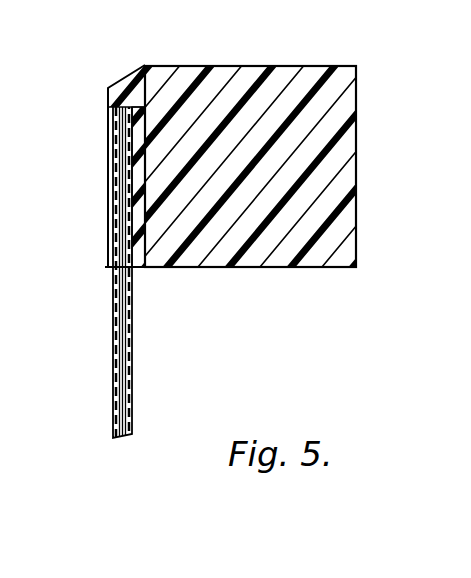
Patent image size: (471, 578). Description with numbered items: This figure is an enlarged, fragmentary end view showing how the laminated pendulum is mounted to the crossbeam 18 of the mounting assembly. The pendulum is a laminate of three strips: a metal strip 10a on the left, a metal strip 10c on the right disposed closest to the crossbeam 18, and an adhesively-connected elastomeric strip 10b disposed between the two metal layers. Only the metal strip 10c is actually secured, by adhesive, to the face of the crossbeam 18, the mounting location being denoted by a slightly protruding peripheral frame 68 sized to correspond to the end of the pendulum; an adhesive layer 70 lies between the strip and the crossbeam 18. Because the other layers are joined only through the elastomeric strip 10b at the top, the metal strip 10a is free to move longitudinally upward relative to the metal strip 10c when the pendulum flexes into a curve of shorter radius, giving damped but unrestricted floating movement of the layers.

The crossbeam 18 is at (282, 67).
The peripheral frame 68 is at (110, 130).
The adhesive layer 70 is at (174, 78).
The metal strip 10a is at (113, 300).
The elastomeric strip 10b is at (121, 437).
The metal strip 10c is at (132, 354).